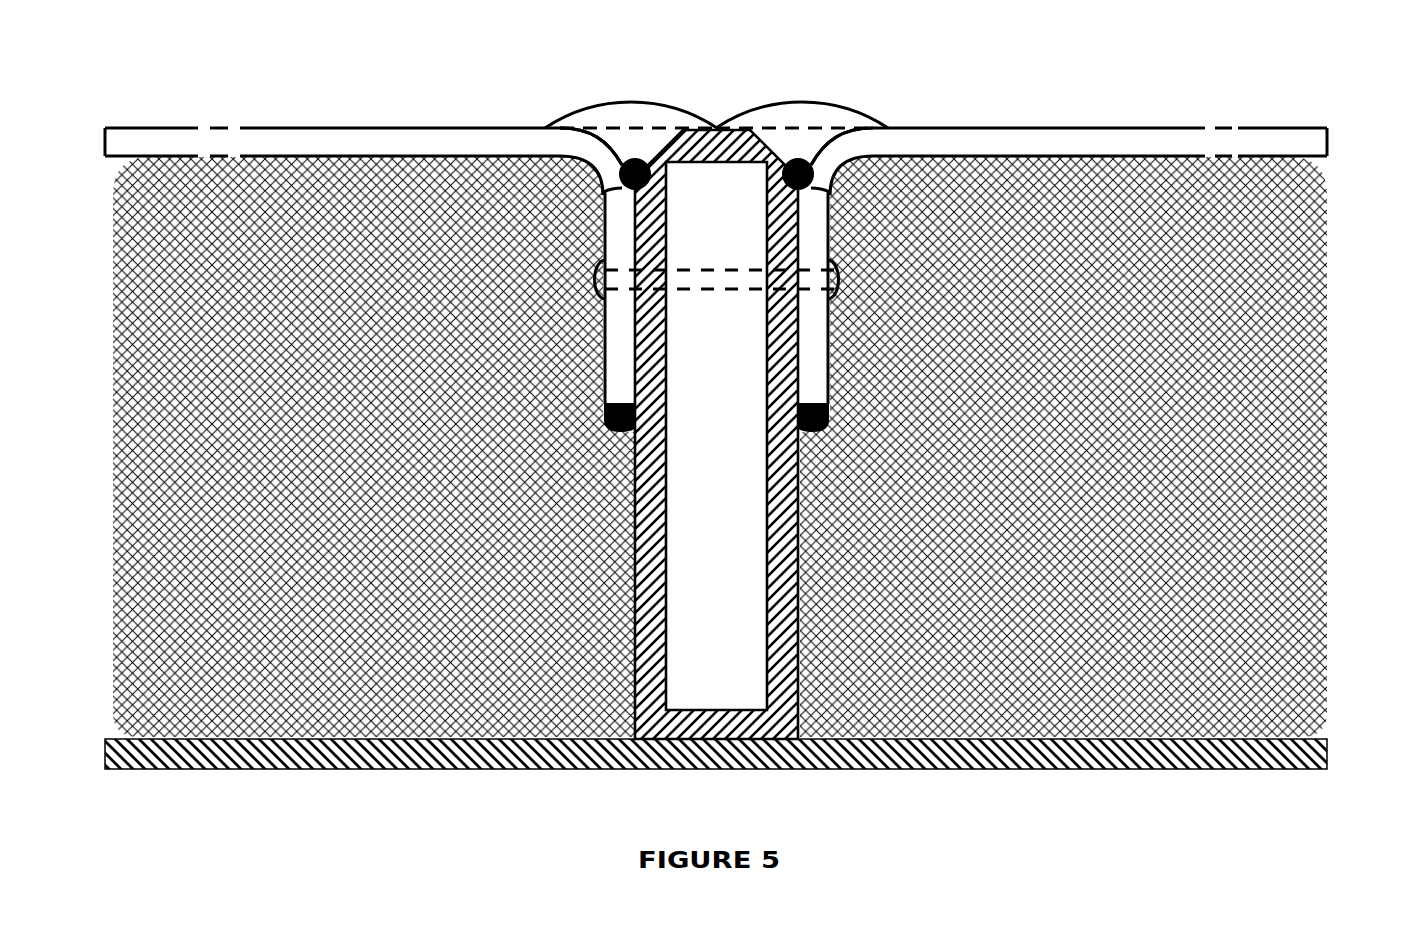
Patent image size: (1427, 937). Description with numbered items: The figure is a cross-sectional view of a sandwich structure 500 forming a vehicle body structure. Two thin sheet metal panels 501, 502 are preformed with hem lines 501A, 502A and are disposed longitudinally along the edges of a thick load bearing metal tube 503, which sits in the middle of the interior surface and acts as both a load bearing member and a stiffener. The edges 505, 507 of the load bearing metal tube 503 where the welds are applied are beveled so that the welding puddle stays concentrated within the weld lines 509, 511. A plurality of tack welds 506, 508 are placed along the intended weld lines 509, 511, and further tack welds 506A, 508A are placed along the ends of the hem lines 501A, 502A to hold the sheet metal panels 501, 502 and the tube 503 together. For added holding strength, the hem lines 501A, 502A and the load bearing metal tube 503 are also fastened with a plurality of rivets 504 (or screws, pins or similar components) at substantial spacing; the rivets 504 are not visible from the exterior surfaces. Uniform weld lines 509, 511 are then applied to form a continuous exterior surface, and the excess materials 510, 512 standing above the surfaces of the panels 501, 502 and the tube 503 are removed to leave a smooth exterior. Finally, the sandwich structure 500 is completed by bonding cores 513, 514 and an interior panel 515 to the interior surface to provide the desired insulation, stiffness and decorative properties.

The sandwich structure 500 is at (985, 70).
The sheet metal panel 501 is at (428, 140).
The hem line 501A is at (615, 353).
The sheet metal panel 502 is at (1018, 140).
The hem line 502A is at (815, 340).
The load bearing metal tube 503 is at (648, 253).
The rivets 504 is at (588, 282).
The edge of load bearing metal tube 505 is at (620, 158).
The tack welds 506 is at (604, 190).
The tack welds 506A is at (604, 420).
The edge of load bearing metal tube 507 is at (828, 170).
The tack welds 508 is at (830, 192).
The tack welds 508A is at (830, 418).
The weld line 509 is at (627, 115).
The excess material 510 is at (655, 102).
The weld line 511 is at (800, 120).
The excess material 512 is at (812, 100).
The core 513 is at (150, 485).
The core 514 is at (1282, 455).
The interior panel 515 is at (1300, 758).